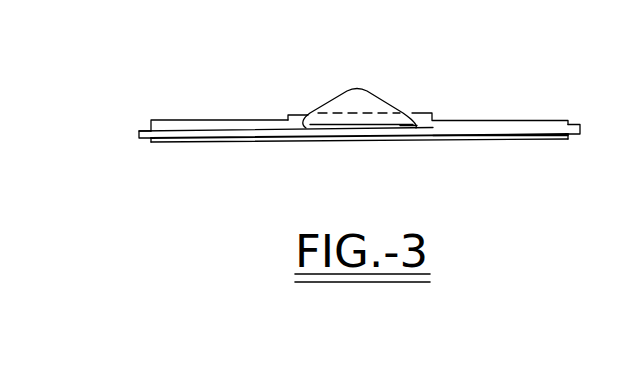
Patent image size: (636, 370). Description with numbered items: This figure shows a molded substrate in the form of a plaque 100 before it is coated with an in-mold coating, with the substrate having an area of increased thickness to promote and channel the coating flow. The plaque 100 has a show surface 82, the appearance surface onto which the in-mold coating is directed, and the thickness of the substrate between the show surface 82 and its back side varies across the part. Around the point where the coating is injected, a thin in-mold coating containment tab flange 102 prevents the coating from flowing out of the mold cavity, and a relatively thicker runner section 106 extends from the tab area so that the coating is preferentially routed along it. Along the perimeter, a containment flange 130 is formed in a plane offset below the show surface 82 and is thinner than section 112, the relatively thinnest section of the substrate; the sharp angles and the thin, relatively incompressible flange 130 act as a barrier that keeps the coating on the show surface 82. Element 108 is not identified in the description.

The plaque 100 is at (317, 128).
The show surface 82 is at (393, 141).
The containment flange 130 is at (134, 132).
The left cover layer 108 is at (205, 120).
The runner section 106 is at (300, 116).
The in-mold coating containment tab flange 102 is at (380, 98).
The section 112 is at (532, 120).